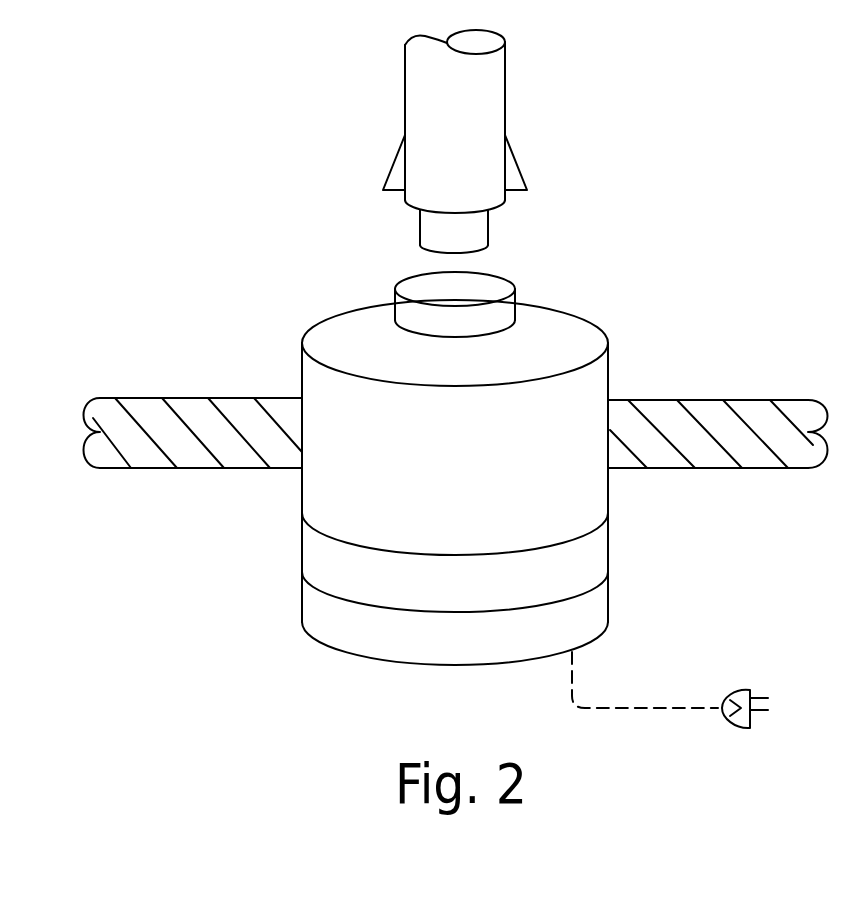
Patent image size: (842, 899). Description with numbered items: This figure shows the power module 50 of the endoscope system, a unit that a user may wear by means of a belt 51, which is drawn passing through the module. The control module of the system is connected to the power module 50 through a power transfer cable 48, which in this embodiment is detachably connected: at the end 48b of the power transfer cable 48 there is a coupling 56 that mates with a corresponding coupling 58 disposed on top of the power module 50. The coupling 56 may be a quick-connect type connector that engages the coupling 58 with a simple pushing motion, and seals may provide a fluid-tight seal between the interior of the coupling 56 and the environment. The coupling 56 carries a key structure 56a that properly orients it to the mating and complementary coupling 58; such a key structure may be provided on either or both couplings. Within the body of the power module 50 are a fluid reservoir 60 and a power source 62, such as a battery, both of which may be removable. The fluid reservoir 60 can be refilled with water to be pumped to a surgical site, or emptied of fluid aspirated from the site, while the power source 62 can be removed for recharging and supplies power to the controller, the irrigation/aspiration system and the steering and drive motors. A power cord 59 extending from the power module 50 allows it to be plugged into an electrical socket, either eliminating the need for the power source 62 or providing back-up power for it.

The power transfer cable 48 is at (490, 73).
The end of the power transfer cable 48b is at (540, 147).
The coupling 56 is at (490, 200).
The key structure 56a is at (393, 183).
The coupling 58 is at (503, 310).
The power module 50 is at (662, 325).
The belt 51 is at (752, 410).
The fluid reservoir 60 is at (600, 544).
The power source 62 is at (600, 600).
The power cord 59 is at (683, 707).